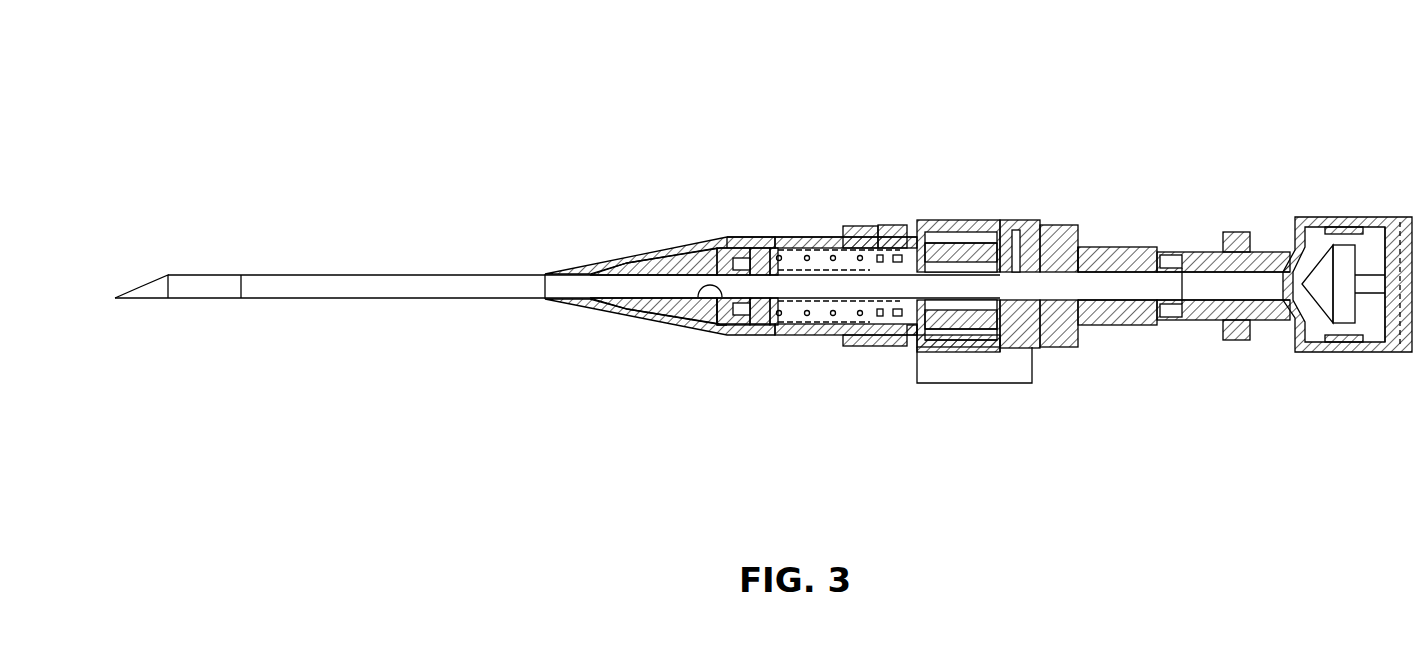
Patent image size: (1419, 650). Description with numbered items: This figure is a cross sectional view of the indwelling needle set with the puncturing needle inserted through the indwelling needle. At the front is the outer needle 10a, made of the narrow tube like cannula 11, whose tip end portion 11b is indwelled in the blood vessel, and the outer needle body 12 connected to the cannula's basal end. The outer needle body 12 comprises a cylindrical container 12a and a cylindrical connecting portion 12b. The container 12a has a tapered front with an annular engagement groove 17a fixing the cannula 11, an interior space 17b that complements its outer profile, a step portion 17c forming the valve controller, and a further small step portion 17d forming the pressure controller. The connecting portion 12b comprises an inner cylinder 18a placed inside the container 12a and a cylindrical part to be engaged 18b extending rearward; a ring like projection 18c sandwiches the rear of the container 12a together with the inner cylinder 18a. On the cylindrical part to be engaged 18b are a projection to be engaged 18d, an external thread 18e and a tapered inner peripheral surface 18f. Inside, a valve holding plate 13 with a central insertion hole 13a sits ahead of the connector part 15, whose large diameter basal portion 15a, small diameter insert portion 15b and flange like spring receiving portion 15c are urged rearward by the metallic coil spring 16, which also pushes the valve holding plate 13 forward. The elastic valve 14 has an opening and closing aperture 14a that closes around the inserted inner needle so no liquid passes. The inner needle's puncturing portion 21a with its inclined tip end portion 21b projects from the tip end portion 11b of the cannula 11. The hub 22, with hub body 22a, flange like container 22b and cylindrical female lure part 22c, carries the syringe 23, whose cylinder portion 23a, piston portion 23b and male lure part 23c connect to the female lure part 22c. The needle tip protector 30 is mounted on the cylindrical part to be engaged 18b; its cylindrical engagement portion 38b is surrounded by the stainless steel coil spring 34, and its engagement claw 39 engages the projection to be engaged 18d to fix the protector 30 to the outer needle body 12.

The outer needle 10a is at (585, 71).
The cannula 11 is at (597, 262).
The tip end portion 11b is at (242, 275).
The outer needle body 12 is at (907, 116).
The cylindrical container 12a is at (742, 237).
The cylindrical connecting portion 12b is at (805, 166).
The valve holding plate 13 is at (760, 326).
The insertion hole 13a is at (785, 336).
The valve 14 is at (736, 326).
The opening and closing aperture 14a is at (700, 297).
The connector part 15 is at (853, 447).
The basal portion 15a is at (922, 347).
The insert portion 15b is at (862, 300).
The spring receiving portion 15c is at (912, 330).
The coil spring 16 is at (834, 336).
The annular engagement groove 17a is at (631, 317).
The space 17b is at (667, 315).
The step portion 17c is at (716, 330).
The step portion 17d is at (777, 336).
The inner cylinder 18a is at (818, 226).
The cylindrical part to be engaged 18b is at (940, 220).
The ring like projection 18c is at (878, 225).
The projection to be engaged 18d is at (997, 347).
The external thread 18e is at (992, 222).
The inner peripheral surface 18f is at (950, 347).
The puncturing portion 21a is at (168, 292).
The tip end portion 21b is at (116, 296).
The hub 22 is at (1078, 435).
The hub body 22a is at (1145, 325).
The flange like container 22b is at (1062, 345).
The cylindrical female lure part 22c is at (1238, 340).
The syringe 23 is at (1300, 150).
The cylinder portion 23a is at (1340, 217).
The piston portion 23b is at (1405, 217).
The male lure part 23c is at (1287, 262).
The needle tip protector 30 is at (1080, 161).
The coil spring 34 is at (1058, 225).
The cylindrical engagement portion 38b is at (1028, 222).
The engagement claw 39 is at (927, 347).